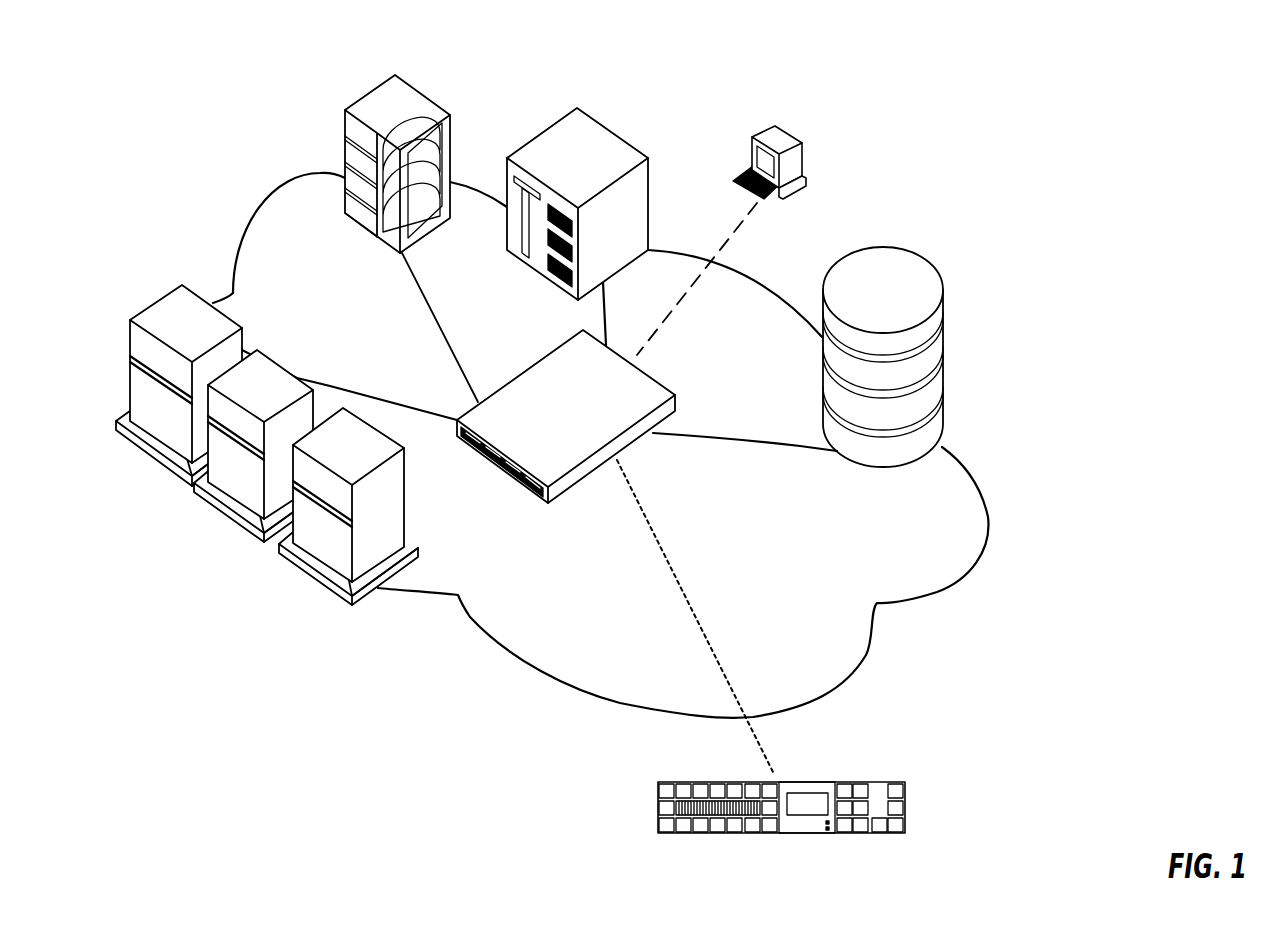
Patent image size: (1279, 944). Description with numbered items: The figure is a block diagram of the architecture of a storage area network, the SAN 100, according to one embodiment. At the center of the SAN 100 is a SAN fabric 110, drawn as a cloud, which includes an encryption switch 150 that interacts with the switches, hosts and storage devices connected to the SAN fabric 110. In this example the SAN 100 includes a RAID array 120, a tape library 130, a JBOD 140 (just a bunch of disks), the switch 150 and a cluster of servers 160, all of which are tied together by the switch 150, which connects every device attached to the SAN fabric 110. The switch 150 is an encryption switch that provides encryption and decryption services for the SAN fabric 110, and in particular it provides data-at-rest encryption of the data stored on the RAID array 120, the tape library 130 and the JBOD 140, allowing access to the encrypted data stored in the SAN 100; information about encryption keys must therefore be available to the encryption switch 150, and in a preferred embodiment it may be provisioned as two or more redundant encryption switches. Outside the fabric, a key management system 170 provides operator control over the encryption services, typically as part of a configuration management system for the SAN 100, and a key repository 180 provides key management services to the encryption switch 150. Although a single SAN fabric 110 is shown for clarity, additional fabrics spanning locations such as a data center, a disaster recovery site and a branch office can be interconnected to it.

The SAN 100 is at (897, 124).
The SAN fabric 110 is at (573, 692).
The RAID array 120 is at (395, 75).
The tape library 130 is at (610, 132).
The JBOD 140 is at (907, 247).
The encryption switch 150 is at (573, 488).
The cluster of servers 160 is at (318, 595).
The key management system 170 is at (785, 130).
The key repository 180 is at (820, 782).